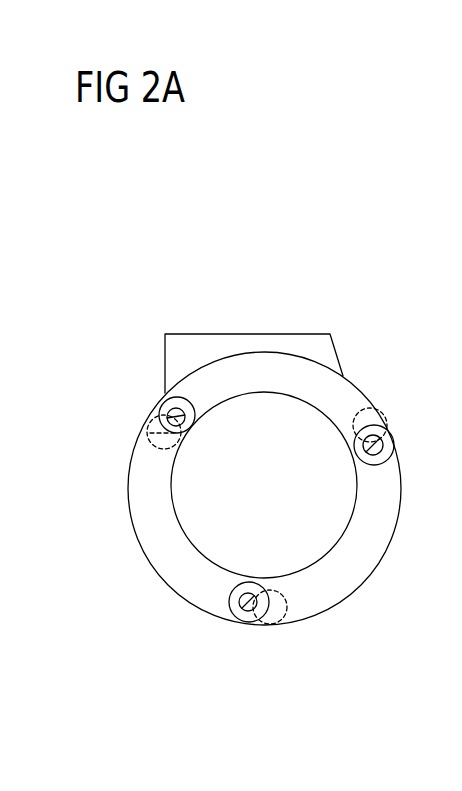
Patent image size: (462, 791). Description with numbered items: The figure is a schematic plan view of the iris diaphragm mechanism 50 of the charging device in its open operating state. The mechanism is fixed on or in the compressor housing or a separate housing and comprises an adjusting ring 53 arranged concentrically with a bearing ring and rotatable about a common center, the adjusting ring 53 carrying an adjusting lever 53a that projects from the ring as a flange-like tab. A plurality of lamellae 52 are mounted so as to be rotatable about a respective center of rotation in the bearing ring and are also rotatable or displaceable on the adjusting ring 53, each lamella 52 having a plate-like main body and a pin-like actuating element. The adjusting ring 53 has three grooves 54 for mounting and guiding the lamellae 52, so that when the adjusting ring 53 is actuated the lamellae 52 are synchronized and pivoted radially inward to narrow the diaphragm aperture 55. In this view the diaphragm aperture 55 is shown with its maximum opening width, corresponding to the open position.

The iris diaphragm mechanism 50 is at (319, 265).
The lamellae 52 is at (343, 398).
The adjusting ring 53 is at (168, 597).
The adjusting lever 53a is at (195, 350).
The grooves 54 is at (141, 425).
The diaphragm aperture 55 is at (240, 492).